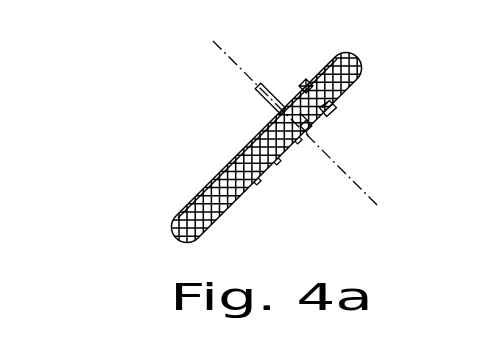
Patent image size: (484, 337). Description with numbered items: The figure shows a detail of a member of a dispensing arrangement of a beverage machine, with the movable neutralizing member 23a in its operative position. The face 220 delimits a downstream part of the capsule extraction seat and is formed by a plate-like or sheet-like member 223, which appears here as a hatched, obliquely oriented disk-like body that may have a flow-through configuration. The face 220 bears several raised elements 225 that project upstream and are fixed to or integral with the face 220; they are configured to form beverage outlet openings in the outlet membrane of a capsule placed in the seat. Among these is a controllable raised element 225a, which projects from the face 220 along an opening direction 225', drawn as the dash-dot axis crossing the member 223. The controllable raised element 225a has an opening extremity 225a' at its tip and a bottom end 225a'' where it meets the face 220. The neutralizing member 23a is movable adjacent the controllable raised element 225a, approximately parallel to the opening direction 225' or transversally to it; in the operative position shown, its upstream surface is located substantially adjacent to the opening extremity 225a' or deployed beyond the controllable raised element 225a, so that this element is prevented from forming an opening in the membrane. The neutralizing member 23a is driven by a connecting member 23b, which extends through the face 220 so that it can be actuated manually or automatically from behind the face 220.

The face 220 is at (222, 202).
The plate-like or sheet-like member 223 is at (180, 219).
The raised elements 225 is at (290, 176).
The controllable raised element 225a is at (363, 145).
The opening extremity 225a' is at (371, 131).
The bottom end 225a'' is at (311, 53).
The opening direction 225' is at (215, 123).
The neutralizing member 23a is at (334, 108).
The connecting member 23b is at (257, 95).